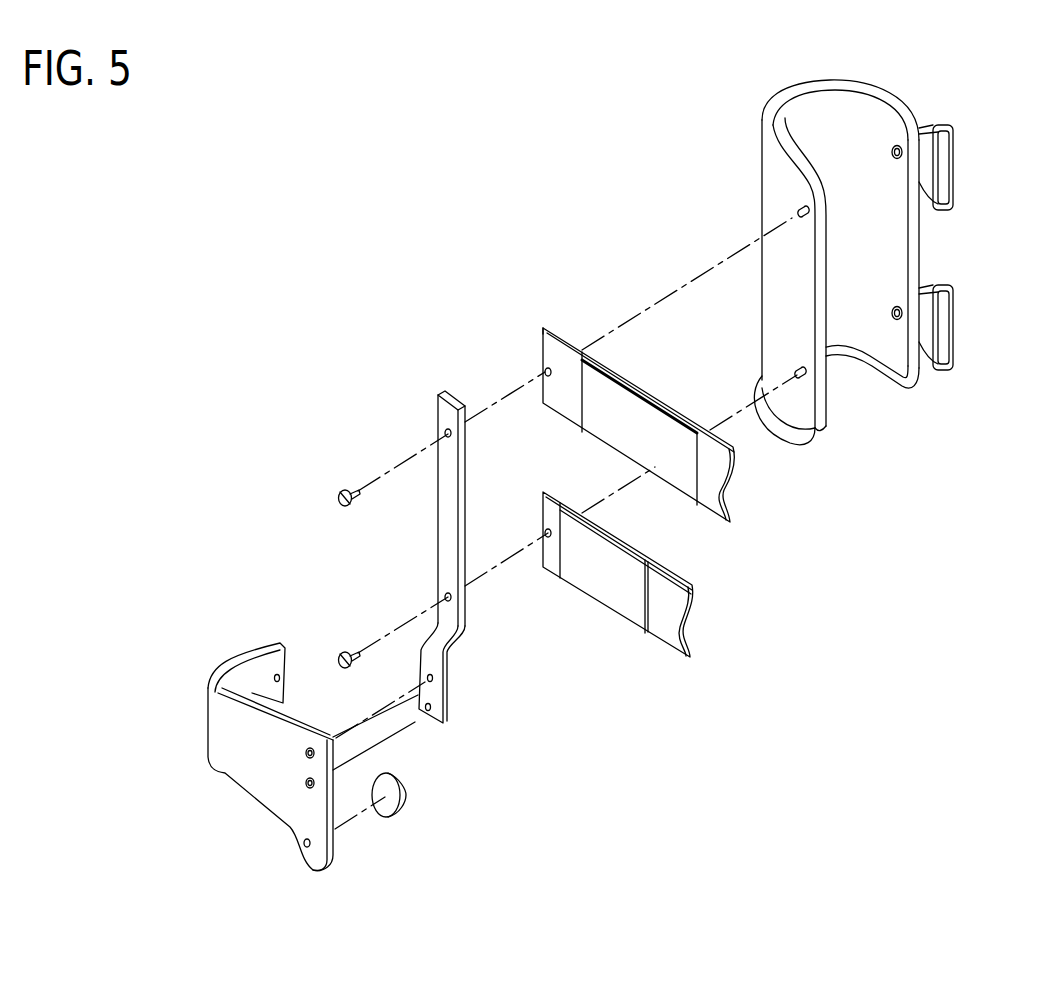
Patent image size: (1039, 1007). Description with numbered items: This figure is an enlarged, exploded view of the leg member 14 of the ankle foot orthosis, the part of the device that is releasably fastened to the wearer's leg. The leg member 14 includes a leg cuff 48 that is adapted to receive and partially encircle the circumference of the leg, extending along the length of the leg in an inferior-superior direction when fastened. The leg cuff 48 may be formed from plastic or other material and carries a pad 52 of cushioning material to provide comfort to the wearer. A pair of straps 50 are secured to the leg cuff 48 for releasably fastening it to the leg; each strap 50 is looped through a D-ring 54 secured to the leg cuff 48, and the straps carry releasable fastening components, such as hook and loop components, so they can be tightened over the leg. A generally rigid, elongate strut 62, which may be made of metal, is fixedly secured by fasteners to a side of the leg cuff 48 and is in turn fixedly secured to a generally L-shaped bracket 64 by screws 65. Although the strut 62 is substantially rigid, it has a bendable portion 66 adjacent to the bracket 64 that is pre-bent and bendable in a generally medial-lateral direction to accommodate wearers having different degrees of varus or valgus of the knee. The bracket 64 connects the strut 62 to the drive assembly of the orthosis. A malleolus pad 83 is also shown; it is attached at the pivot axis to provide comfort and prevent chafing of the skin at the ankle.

The leg member 14 is at (384, 240).
The leg cuff 48 is at (780, 173).
The strap 50 is at (712, 500).
The pad 52 is at (853, 108).
The D-ring 54 is at (953, 172).
The leg member strut 62 is at (445, 515).
The bracket 64 is at (253, 765).
The screws 65 is at (345, 490).
The bendable portion 66 is at (435, 650).
The malleolus pad 83 is at (406, 805).